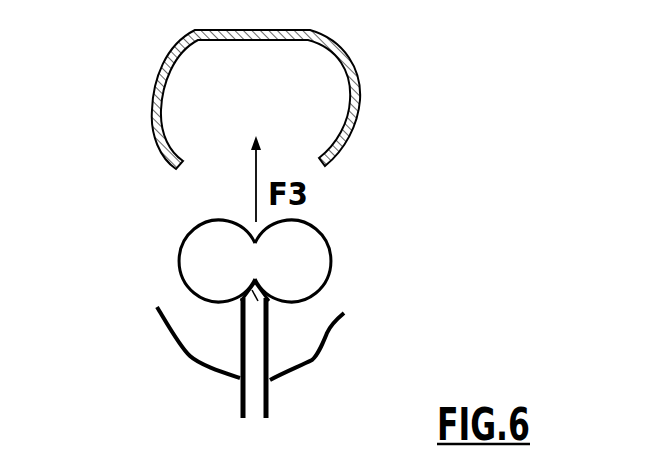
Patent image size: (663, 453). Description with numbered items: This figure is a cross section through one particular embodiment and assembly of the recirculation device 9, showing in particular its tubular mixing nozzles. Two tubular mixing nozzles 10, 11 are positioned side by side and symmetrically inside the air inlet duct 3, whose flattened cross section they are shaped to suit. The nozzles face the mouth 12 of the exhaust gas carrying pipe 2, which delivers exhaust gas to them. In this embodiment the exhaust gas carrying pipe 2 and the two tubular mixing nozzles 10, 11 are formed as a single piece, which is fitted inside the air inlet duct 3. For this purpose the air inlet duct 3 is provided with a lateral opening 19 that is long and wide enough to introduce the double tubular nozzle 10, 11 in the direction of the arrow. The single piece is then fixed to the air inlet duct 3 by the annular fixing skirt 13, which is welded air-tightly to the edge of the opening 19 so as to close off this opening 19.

The air inlet duct 3 is at (359, 86).
The lateral opening 19 is at (216, 166).
The tubular mixing nozzle 11 is at (180, 262).
The tubular mixing nozzle 10 is at (329, 273).
The exhaust gas carrying pipe 2 is at (239, 414).
The mouth 12 is at (238, 329).
The recirculation device 9 is at (147, 331).
The annular fixing skirt 13 is at (312, 362).